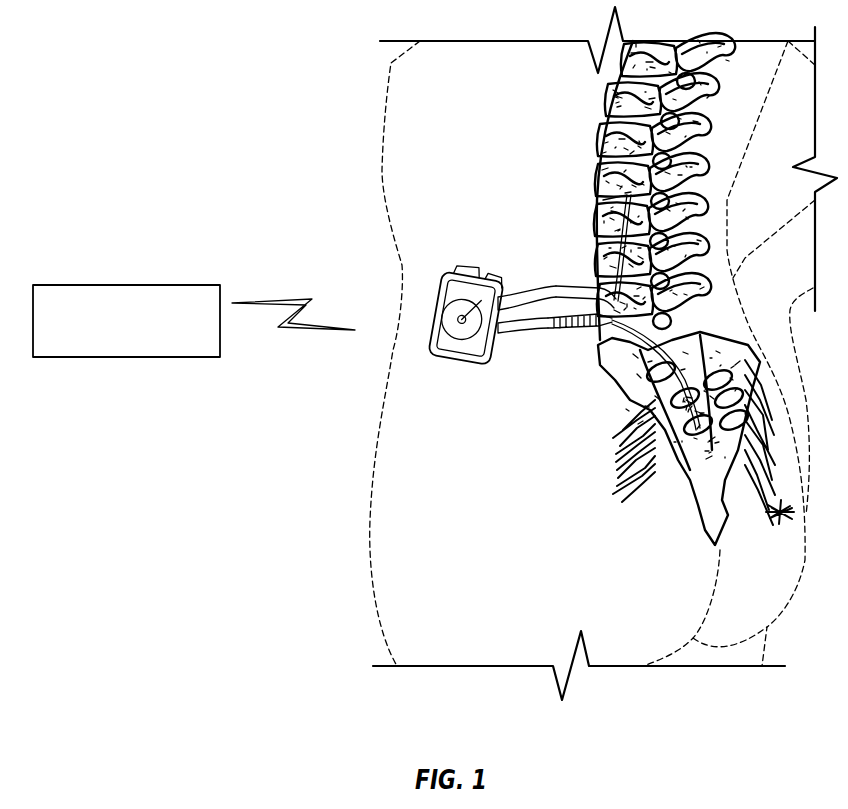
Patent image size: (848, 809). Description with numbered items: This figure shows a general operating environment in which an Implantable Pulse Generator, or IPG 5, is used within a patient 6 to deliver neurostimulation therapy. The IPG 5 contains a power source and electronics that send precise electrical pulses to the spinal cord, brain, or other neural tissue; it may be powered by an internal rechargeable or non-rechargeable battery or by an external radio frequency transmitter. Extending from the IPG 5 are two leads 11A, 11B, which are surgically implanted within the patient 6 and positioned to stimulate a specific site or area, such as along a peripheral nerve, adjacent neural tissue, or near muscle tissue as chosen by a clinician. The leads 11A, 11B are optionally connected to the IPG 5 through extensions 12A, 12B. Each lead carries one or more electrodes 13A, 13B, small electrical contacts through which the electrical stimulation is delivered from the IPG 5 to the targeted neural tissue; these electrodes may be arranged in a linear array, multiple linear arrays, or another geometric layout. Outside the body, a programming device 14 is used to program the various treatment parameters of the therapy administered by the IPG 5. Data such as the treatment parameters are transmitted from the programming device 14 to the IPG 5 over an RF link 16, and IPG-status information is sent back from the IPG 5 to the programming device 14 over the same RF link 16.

The Implantable Pulse Generator (IPG) 5 is at (458, 268).
The patient 6 is at (383, 97).
The lead 11A is at (586, 280).
The lead 11B is at (598, 336).
The extension 12A is at (535, 283).
The extension 12B is at (520, 342).
The electrodes 13A is at (600, 197).
The electrodes 13B is at (625, 478).
The programming device 14 is at (72, 284).
The RF link 16 is at (297, 300).